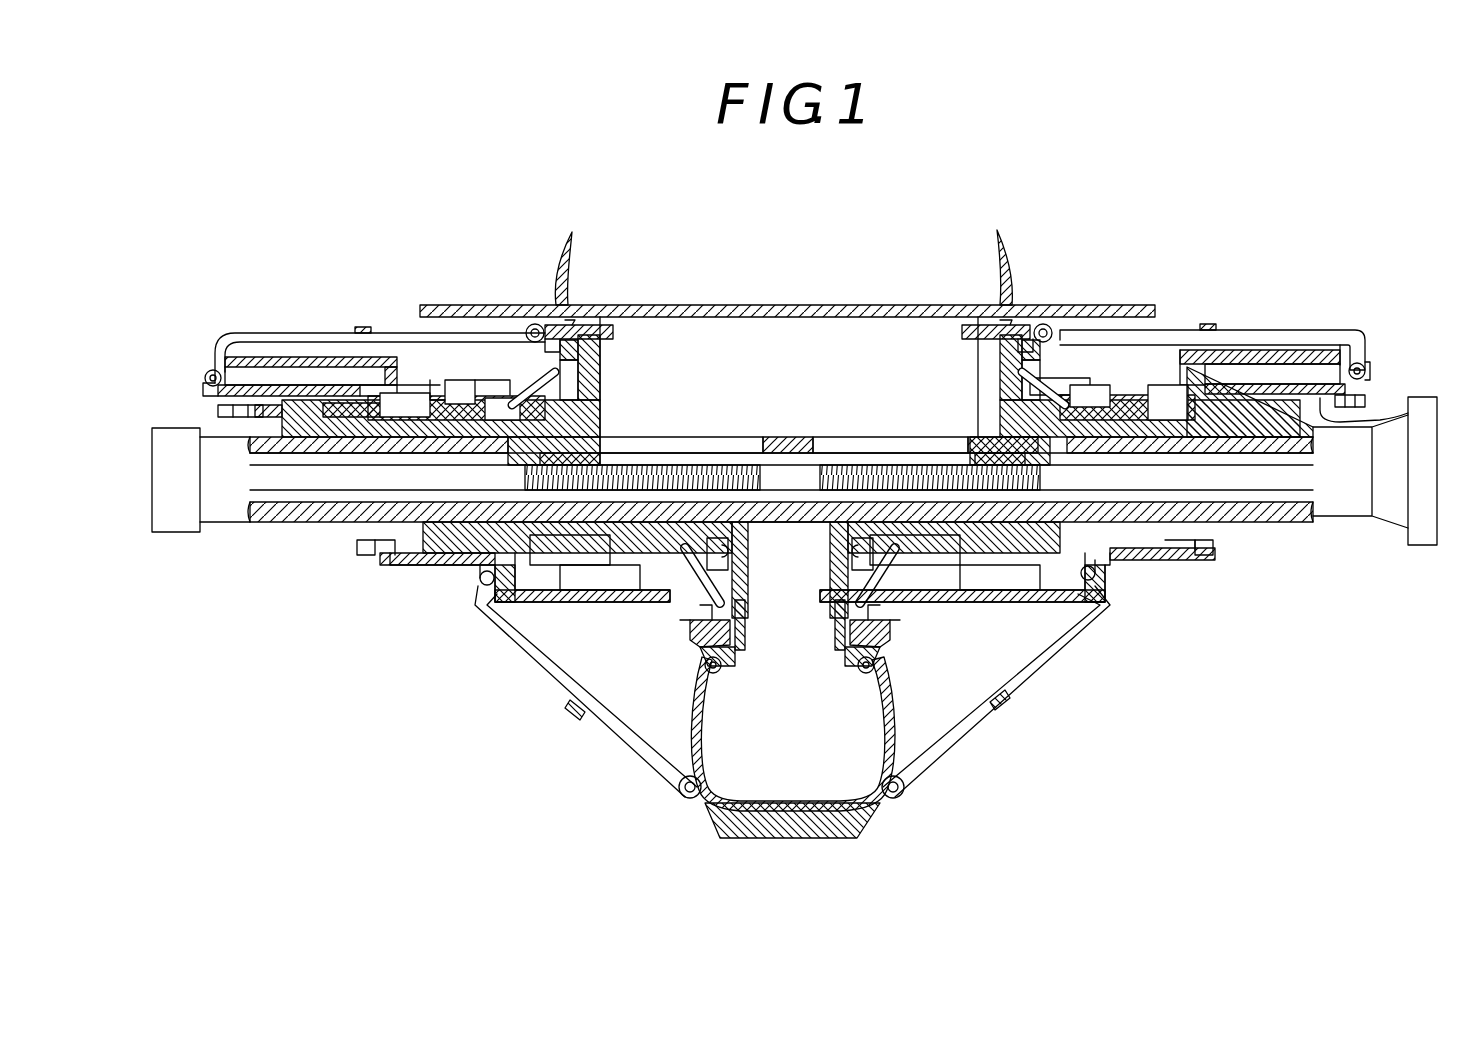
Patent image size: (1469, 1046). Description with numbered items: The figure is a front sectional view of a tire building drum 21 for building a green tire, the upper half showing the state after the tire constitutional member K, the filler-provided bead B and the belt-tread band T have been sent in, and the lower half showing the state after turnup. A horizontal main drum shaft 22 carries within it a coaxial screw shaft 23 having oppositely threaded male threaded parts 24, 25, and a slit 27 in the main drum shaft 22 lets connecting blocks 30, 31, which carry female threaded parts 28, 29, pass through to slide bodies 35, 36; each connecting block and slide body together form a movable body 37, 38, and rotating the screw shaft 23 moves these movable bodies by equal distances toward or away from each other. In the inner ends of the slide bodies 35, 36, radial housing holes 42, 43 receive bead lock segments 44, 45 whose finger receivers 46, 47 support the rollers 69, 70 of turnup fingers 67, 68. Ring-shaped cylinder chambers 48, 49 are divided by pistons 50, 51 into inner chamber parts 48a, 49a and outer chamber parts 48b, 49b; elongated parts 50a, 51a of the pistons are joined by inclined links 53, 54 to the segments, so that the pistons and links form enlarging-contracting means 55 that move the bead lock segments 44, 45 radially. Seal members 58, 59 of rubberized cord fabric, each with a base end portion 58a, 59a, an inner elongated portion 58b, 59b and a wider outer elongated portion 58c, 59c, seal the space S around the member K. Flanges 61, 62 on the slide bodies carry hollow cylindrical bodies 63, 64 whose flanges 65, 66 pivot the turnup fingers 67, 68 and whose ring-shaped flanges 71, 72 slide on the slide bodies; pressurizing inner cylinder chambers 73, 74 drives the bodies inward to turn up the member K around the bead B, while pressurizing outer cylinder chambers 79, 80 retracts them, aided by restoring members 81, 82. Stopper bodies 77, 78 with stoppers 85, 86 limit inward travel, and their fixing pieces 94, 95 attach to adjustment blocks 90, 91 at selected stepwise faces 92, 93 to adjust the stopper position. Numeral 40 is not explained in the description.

The tire building drum 21 is at (1299, 288).
The main drum shaft 22 is at (1295, 505).
The screw shaft 23 is at (1212, 476).
The male threaded part 24 is at (645, 465).
The male threaded part 25 is at (733, 440).
The slit 27 is at (835, 440).
The female threaded part 28 is at (600, 432).
The female threaded part 29 is at (975, 440).
The connecting block 30 is at (600, 405).
The connecting block 31 is at (1000, 430).
The slide body 35 is at (204, 372).
The slide body 36 is at (1345, 445).
The movable body 37 is at (340, 455).
The movable body 38 is at (1300, 468).
The slide sleeve 40 is at (706, 425).
The housing hole 42 is at (725, 548).
The housing hole 43 is at (852, 552).
The bead lock segment 44 is at (592, 312).
The bead lock segment 45 is at (988, 318).
The finger receiver 46 is at (703, 668).
The finger receiver 47 is at (877, 663).
The cylinder chamber 48 is at (603, 555).
The inner chamber part 48a is at (458, 380).
The outer chamber part 48b is at (410, 388).
The cylinder chamber 49 is at (1013, 553).
The inner chamber part 49a is at (1118, 393).
The outer chamber part 49b is at (1165, 395).
The piston 50 is at (640, 590).
The elongated part 50a is at (478, 395).
The piston 51 is at (965, 580).
The elongated part 51a is at (1105, 385).
The link 53 is at (535, 388).
The link 54 is at (1040, 375).
The enlarging-contracting means 55 is at (595, 245).
The seal member 58 is at (618, 332).
The base end portion 58a is at (738, 605).
The inner elongated portion 58b is at (600, 345).
The outer elongated portion 58c is at (590, 318).
The seal member 59 is at (962, 332).
The base end portion 59a is at (836, 605).
The inner elongated portion 59b is at (980, 340).
The outer elongated portion 59c is at (978, 318).
The flange 61 is at (490, 615).
The flange 62 is at (1085, 600).
The hollow cylindrical body 63 is at (555, 602).
The hollow cylindrical body 64 is at (1030, 602).
The flange 65 is at (480, 580).
The flange 66 is at (1098, 575).
The turnup finger 67 is at (292, 335).
The turnup finger 68 is at (1250, 325).
The roller 69 is at (690, 798).
The roller 70 is at (905, 790).
The ring-shaped flange 71 is at (400, 400).
The ring-shaped flange 72 is at (1225, 345).
The inner cylinder chamber 73 is at (578, 552).
The inner cylinder chamber 74 is at (975, 590).
The stopper body 77 is at (228, 370).
The stopper body 78 is at (1365, 358).
The outer cylinder chamber 79 is at (310, 372).
The outer cylinder chamber 80 is at (1350, 335).
The restoring member 81 is at (578, 718).
The restoring member 82 is at (1010, 705).
The stopper 85 is at (365, 360).
The stopper 86 is at (1290, 375).
The adjustment block 90 is at (358, 550).
The adjustment block 91 is at (1215, 550).
The stepwise face 92 is at (385, 566).
The stepwise face 93 is at (1200, 562).
The fixing piece 94 is at (250, 418).
The fixing piece 95 is at (1360, 420).
The filler-provided bead B is at (565, 255).
The tire constitutional member K is at (803, 303).
The space S is at (793, 359).
The belt-tread band T is at (880, 828).